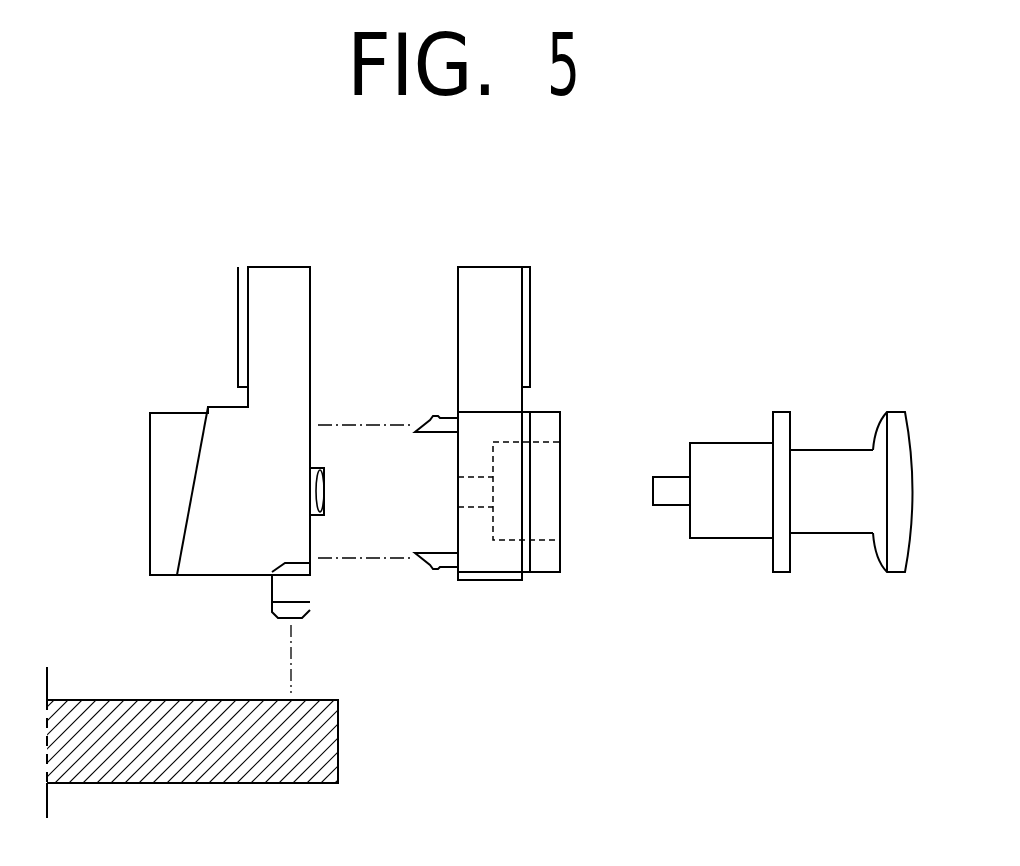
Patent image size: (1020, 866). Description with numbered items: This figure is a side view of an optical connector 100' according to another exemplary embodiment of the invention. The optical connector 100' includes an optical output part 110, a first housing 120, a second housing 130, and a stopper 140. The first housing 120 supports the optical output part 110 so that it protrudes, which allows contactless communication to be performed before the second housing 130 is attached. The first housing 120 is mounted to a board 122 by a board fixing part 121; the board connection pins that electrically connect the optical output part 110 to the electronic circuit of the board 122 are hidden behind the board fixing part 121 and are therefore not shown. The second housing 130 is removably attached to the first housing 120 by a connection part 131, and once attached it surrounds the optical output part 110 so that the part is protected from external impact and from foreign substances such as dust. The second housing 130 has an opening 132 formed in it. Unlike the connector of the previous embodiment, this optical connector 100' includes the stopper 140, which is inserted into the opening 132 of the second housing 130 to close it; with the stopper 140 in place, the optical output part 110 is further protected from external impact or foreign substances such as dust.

The optical connector 100' is at (456, 506).
The optical output part 110 is at (323, 476).
The first housing 120 is at (158, 485).
The board fixing part 121 is at (305, 606).
The board 122 is at (192, 783).
The second housing 130 is at (496, 268).
The connection part 131 is at (424, 553).
The opening 132 is at (550, 442).
The stopper 140 is at (731, 450).